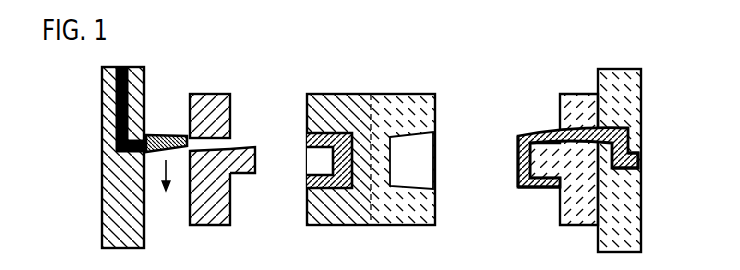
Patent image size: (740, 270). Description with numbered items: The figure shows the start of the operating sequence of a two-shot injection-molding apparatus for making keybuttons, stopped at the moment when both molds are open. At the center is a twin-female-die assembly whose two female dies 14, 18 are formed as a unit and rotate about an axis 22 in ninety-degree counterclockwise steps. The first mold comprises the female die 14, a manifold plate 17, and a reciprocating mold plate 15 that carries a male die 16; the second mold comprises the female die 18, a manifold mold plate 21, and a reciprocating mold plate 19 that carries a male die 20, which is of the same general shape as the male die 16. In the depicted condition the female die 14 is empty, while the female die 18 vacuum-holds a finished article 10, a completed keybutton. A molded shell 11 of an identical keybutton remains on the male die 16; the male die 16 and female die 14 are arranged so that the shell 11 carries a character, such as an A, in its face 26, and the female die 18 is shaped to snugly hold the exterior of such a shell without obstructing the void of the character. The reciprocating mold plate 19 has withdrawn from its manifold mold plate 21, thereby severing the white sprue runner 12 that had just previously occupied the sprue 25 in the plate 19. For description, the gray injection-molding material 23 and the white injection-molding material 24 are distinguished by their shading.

The finished article 10 is at (323, 167).
The molded shell 11 is at (536, 187).
The sprue runner 12 is at (160, 136).
The first female die 14 is at (395, 215).
The reciprocating mold plate 15 is at (578, 215).
The male die 16 is at (540, 157).
The manifold plate 17 is at (628, 243).
The second female die 18 is at (337, 103).
The reciprocating mold plate 19 is at (207, 213).
The male die 20 is at (243, 152).
The manifold mold plate 21 is at (113, 231).
The axis 22 is at (371, 159).
The injection-molding material 23 is at (639, 160).
The injection-molding material 24 is at (116, 104).
The sprue 25 is at (207, 108).
The face 26 is at (518, 161).